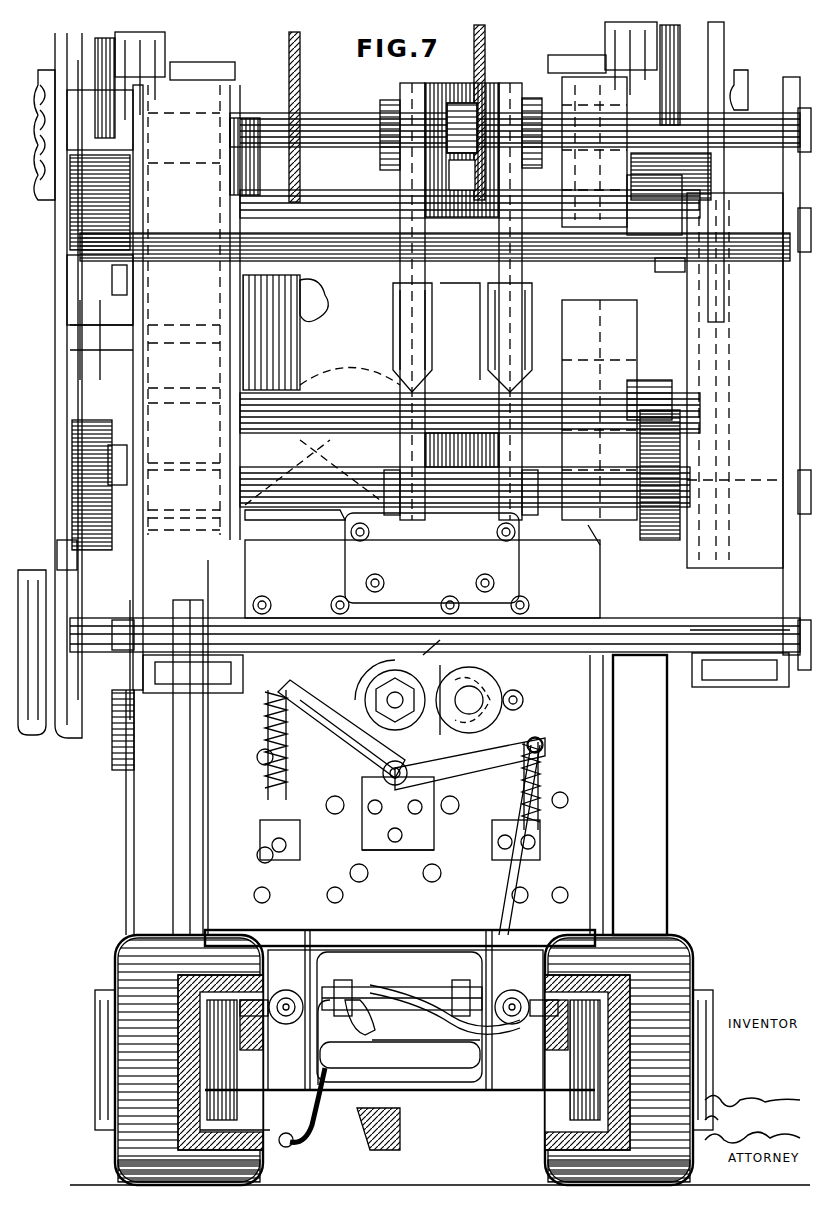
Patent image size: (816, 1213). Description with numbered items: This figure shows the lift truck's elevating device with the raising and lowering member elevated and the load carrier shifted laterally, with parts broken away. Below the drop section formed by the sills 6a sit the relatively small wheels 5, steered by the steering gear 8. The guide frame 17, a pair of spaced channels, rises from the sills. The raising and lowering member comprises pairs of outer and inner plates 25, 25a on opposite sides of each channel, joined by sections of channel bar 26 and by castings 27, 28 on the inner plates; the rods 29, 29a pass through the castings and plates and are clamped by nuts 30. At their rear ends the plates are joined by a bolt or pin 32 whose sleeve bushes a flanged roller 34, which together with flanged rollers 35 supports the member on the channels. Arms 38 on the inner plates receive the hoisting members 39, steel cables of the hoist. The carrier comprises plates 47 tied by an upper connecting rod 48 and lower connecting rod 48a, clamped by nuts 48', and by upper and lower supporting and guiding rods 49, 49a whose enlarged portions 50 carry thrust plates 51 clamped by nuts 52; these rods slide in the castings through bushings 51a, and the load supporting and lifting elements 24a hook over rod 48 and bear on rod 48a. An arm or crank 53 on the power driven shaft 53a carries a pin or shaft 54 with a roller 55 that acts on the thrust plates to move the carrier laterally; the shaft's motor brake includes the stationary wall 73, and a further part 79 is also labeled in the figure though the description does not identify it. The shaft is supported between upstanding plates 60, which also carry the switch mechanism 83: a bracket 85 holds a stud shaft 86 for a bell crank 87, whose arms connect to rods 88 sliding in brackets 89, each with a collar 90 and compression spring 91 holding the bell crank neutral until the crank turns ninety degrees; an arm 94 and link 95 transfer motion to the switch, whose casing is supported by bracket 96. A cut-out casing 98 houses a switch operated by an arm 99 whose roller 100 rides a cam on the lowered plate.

The relatively small wheels 5 is at (115, 1160).
The sills 6a is at (400, 1010).
The steering gear 8 is at (300, 1150).
The guide frame 17 is at (158, 42).
The load supporting and lifting elements 24a is at (725, 694).
The outer plates 25 is at (60, 265).
The inner plates 25a is at (570, 57).
The sections of channel bar 26 is at (78, 205).
The casting 27 is at (582, 95).
The casting 28 is at (618, 360).
The rod 29 is at (328, 200).
The rod 29a is at (300, 395).
The nuts 30 is at (635, 190).
The bolt or pin 32 is at (46, 70).
The flanged roller 34 is at (104, 38).
The flanged rollers 35 is at (112, 548).
The arms 38 is at (305, 342).
The hoisting members 39 is at (300, 52).
The plates 47 is at (133, 283).
The upper connecting rod 48 is at (387, 454).
The nuts 48' is at (415, 387).
The lower connecting rod 48a is at (690, 624).
The upper supporting and guiding rod 49 is at (312, 128).
The lower supporting and guiding rod 49a is at (295, 515).
The enlarged portions 50 is at (462, 103).
The thrust plates 51 is at (403, 90).
The bushings 51a is at (602, 548).
The nuts 52 is at (388, 104).
The arm or crank 53 is at (431, 643).
The power driven shaft 53a is at (482, 652).
The pin or shaft 54 is at (524, 698).
The roller 55 is at (486, 696).
The upstanding plates 60 is at (500, 708).
The stationary wall 73 is at (372, 370).
The hanger 79 is at (393, 296).
The switch mechanism 83 is at (285, 745).
The bracket 85 is at (418, 838).
The stud shaft 86 is at (398, 813).
The bell crank 87 is at (462, 776).
The rods 88 is at (262, 868).
The brackets 89 is at (292, 820).
The collar 90 is at (556, 768).
The compression spring 91 is at (268, 750).
The arm 94 is at (465, 473).
The link 95 is at (422, 565).
The bracket 96 is at (378, 618).
The casing 98 is at (52, 730).
The arm 99 is at (170, 640).
The roller 100 is at (112, 745).